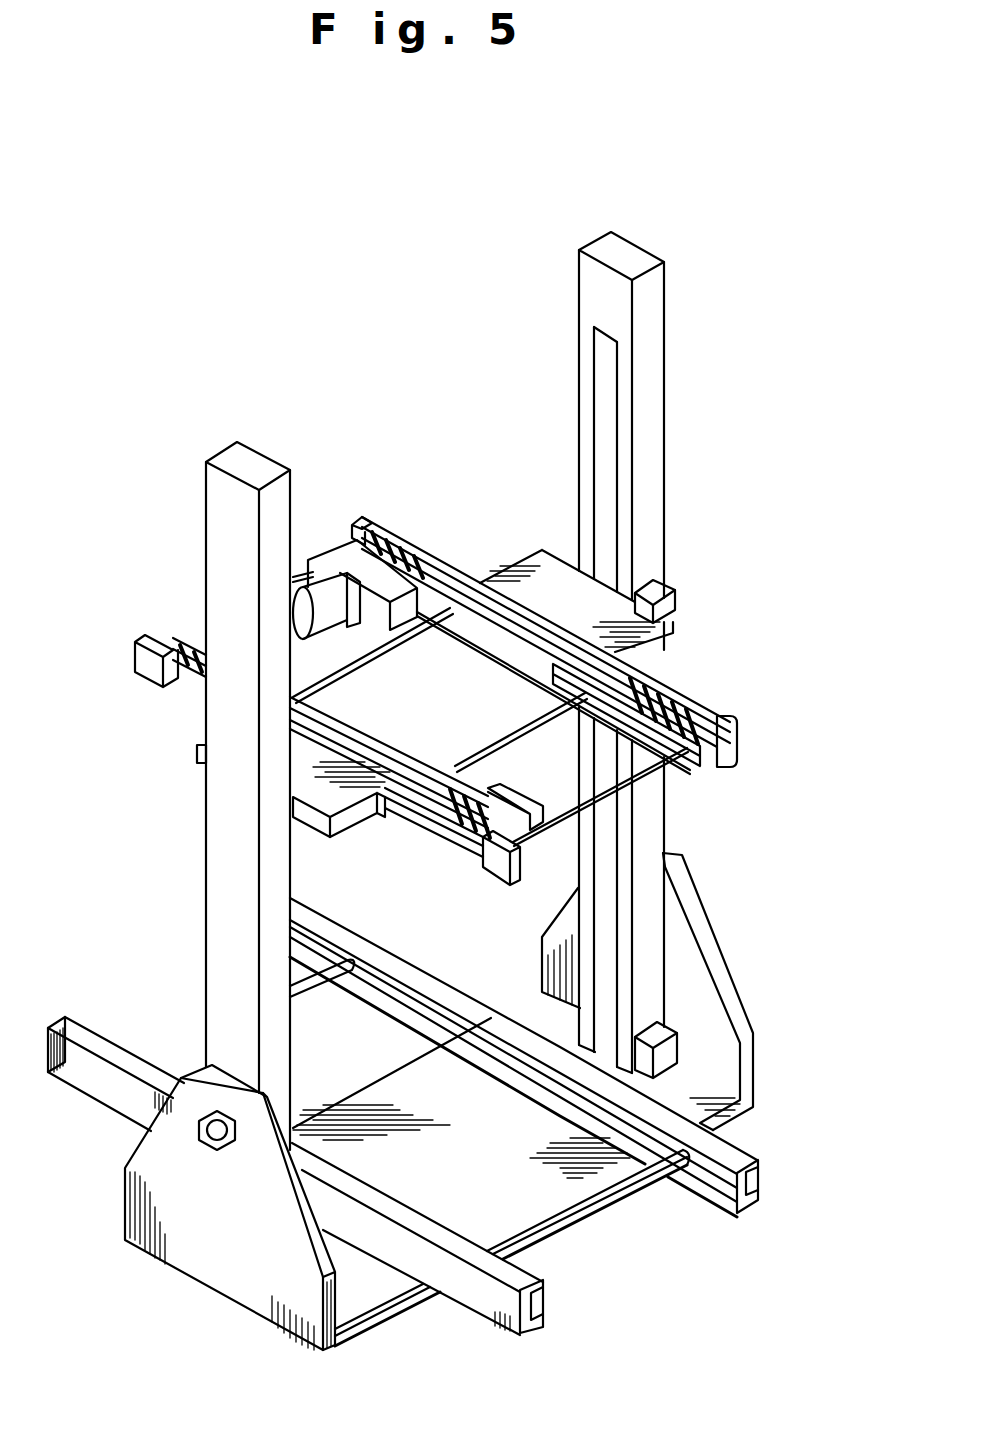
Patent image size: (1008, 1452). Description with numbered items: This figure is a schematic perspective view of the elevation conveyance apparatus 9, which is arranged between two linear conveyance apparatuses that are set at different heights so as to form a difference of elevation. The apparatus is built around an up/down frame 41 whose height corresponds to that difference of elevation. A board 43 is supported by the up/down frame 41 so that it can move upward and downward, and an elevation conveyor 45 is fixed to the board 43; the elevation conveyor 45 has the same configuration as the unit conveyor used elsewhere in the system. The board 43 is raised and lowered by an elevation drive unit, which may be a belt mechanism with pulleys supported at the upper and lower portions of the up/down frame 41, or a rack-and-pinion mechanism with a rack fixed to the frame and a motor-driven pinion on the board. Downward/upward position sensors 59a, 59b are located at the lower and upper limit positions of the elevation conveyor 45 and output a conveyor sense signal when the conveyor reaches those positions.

The elevation conveyance apparatus 9 is at (764, 806).
The up/down frame 41 is at (692, 968).
The board 43 is at (338, 792).
The elevation conveyor 45 is at (447, 828).
The downward/upward position sensor 59a is at (663, 1058).
The downward/upward position sensor 59b is at (667, 610).